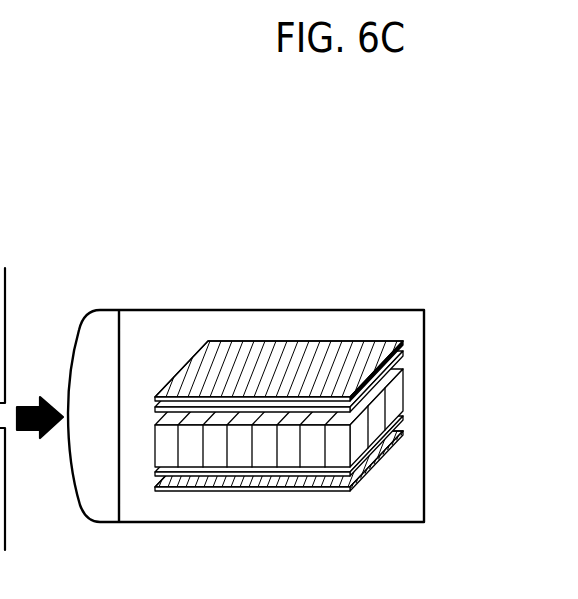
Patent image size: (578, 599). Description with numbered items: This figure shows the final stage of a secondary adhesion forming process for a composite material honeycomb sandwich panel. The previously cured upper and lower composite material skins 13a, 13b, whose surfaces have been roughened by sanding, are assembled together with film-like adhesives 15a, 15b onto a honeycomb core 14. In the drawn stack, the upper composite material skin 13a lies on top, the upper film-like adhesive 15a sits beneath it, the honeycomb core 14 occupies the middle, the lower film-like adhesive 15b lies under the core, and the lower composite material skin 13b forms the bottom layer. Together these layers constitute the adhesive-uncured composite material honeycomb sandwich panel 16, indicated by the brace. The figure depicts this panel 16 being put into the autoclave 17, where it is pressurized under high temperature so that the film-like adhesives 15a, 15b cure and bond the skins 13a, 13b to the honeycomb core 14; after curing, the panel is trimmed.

The composite material skin 13a is at (287, 361).
The film-like adhesive 15a is at (403, 355).
The honeycomb core 14 is at (403, 397).
The film-like adhesive 15b is at (403, 419).
The composite material skin 13b is at (403, 433).
The adhesive-uncured composite material honeycomb sandwich panel 16 is at (312, 406).
The autoclave 17 is at (157, 308).